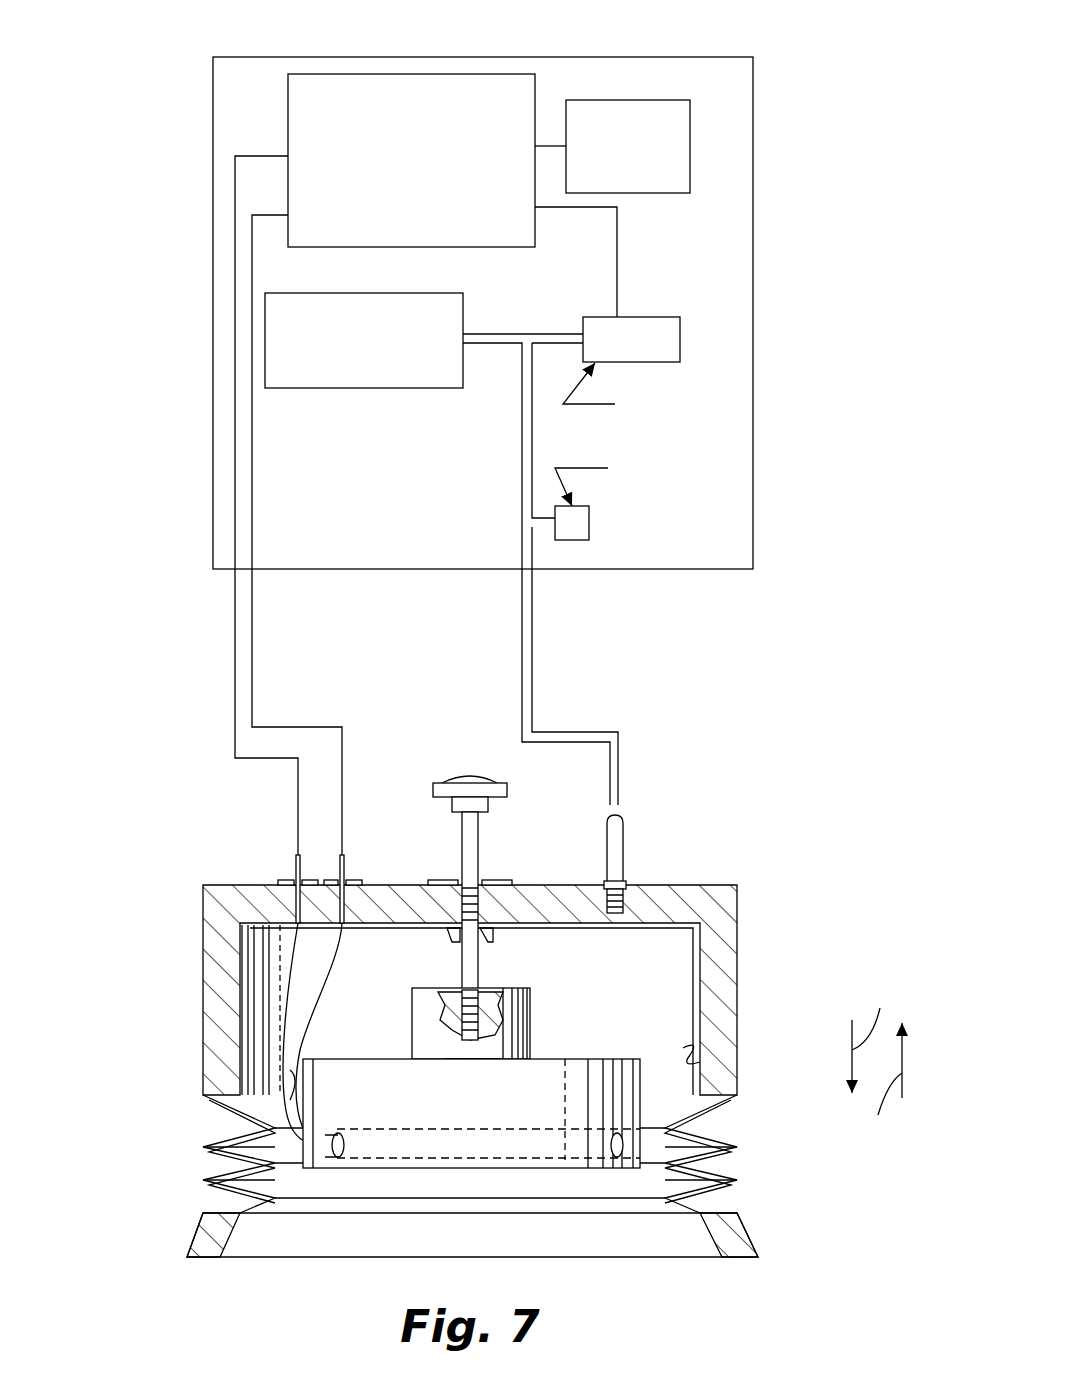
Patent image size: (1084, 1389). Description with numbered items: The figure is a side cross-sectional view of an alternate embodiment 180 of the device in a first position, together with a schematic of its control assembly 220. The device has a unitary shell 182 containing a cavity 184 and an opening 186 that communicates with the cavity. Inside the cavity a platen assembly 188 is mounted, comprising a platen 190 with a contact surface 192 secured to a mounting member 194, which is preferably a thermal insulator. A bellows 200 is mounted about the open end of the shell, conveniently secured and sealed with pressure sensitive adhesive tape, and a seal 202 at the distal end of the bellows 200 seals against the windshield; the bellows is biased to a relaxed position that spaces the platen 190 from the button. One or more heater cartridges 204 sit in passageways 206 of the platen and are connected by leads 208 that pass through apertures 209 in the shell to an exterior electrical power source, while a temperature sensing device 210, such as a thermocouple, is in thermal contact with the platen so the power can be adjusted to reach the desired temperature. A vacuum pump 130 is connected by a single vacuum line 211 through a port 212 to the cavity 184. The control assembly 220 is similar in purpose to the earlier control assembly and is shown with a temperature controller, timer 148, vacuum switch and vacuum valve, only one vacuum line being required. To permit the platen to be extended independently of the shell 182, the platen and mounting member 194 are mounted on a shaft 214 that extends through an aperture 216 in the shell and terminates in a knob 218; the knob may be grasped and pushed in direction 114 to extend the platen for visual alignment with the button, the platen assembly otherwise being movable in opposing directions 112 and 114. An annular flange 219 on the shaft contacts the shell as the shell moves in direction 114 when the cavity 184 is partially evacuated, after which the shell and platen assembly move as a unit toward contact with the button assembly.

The control assembly 220 is at (758, 140).
The timer 148 is at (676, 195).
The vacuum pump 130 is at (328, 388).
The alternate embodiment 180 is at (708, 803).
The unitary shell 182 is at (730, 977).
The cavity 184 is at (581, 985).
The opening 186 is at (713, 1063).
The platen assembly 188 is at (363, 1055).
The platen 190 is at (540, 1072).
The contact surface 192 is at (460, 1170).
The mounting member 194 is at (500, 990).
The bellows 200 is at (720, 1140).
The seal 202 is at (740, 1228).
The heater cartridge 204 is at (300, 1153).
The passageway 206 is at (643, 1148).
The lead 208 is at (293, 972).
The aperture 209 is at (296, 872).
The temperature sensing device 210 is at (293, 1077).
The vacuum line 211 is at (626, 838).
The port 212 is at (628, 882).
The shaft 214 is at (478, 833).
The aperture 216 is at (478, 875).
The knob 218 is at (460, 778).
The annular flange 219 is at (447, 935).
The direction 114 is at (876, 1036).
The direction 112 is at (878, 1086).